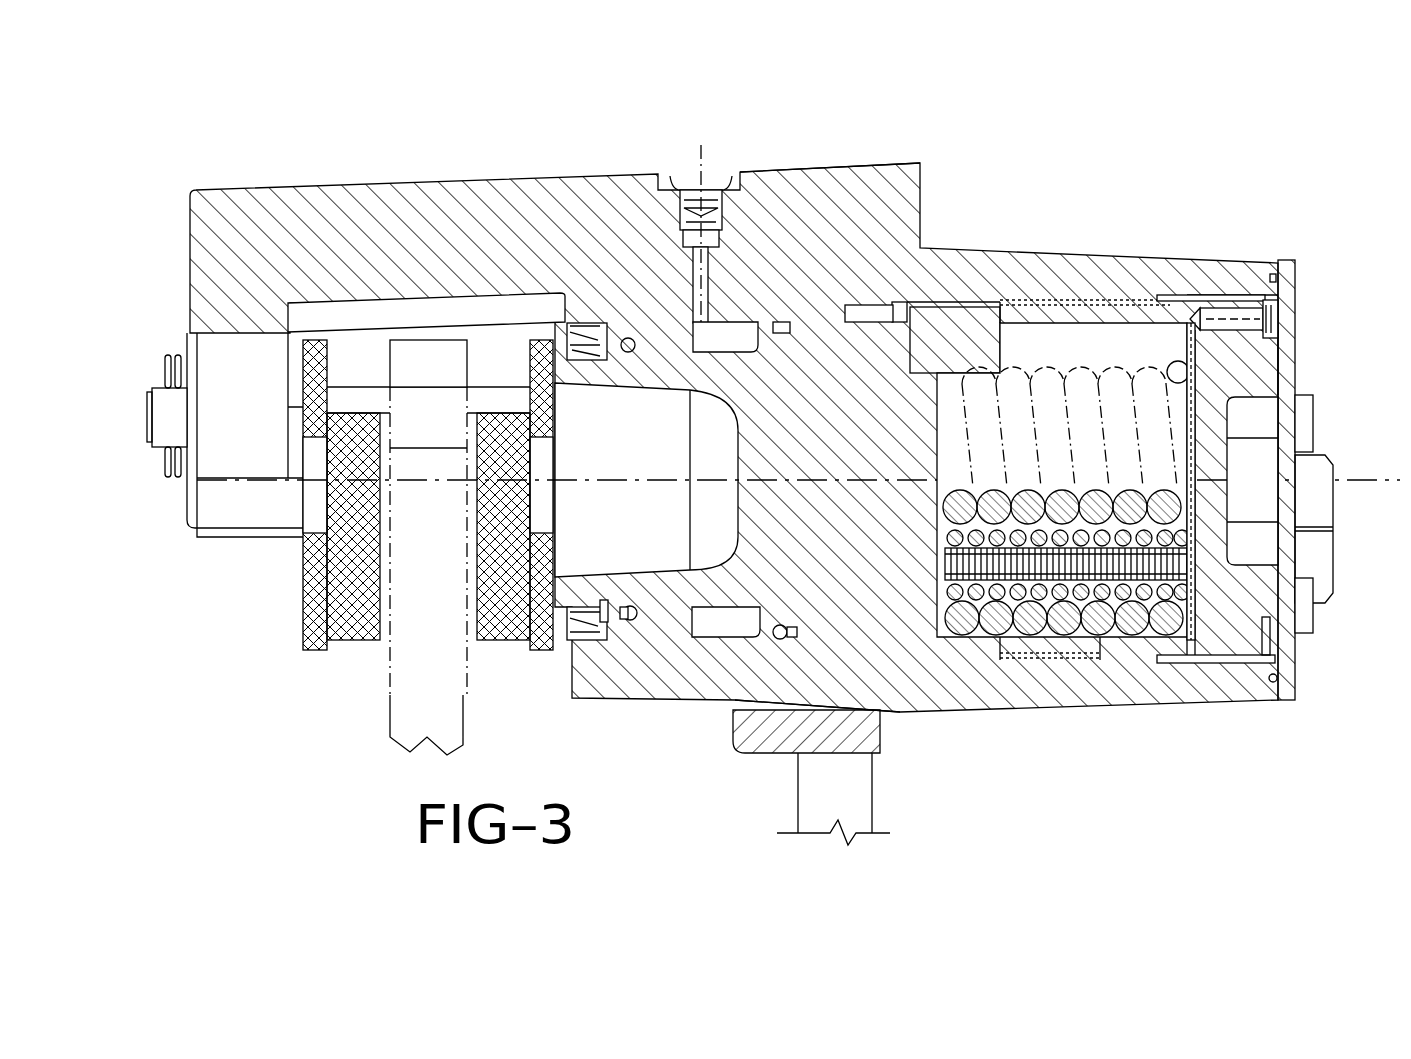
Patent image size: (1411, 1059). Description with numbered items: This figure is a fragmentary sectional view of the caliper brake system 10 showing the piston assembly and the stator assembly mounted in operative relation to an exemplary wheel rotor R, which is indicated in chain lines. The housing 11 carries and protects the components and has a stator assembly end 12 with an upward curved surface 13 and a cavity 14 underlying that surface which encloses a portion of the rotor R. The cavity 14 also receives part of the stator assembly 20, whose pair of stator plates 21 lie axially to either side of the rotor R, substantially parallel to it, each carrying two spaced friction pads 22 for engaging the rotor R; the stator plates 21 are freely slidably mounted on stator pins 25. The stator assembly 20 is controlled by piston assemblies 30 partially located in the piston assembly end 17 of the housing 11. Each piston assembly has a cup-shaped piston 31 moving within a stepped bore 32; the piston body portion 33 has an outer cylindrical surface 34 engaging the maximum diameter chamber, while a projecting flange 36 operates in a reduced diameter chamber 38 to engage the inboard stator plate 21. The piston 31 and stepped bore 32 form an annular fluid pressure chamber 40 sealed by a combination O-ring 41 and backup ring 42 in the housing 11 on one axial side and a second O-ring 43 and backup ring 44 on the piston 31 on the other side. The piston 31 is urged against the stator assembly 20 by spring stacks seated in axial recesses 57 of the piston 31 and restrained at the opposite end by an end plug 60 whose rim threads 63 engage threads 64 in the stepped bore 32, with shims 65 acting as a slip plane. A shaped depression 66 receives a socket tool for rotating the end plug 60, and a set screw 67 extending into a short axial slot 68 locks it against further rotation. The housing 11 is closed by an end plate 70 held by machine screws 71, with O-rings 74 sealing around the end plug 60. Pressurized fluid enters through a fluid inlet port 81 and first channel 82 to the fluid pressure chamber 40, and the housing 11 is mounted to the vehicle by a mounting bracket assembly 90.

The caliper brake system 10 is at (134, 146).
The housing 11 is at (790, 166).
The stator assembly end 12 is at (190, 240).
The upward curved surface 13 is at (328, 308).
The cavity 14 is at (343, 297).
The piston assembly end 17 is at (1022, 710).
The stator assembly 20 is at (292, 565).
The stator plates 21 is at (522, 360).
The pads 22 is at (348, 632).
The stator pins 25 is at (155, 420).
The piston assemblies 30 is at (985, 290).
The cup-shaped piston 31 is at (734, 437).
The stepped bore 32 is at (745, 340).
The body portion 33 is at (846, 341).
The outer cylindrical surface 34 is at (928, 305).
The projecting flange 36 is at (590, 328).
The reduced diameter chamber 38 is at (668, 600).
The annular fluid pressure chamber 40 is at (727, 625).
The O-ring 41 is at (660, 608).
The backup ring 42 is at (616, 614).
The second O-ring 43 is at (782, 640).
The backup ring 44 is at (805, 635).
The axial recess 57 is at (988, 648).
The end plug 60 is at (1182, 285).
The threads 63 is at (1140, 300).
The threads 64 is at (1048, 300).
The shims 65 is at (1197, 385).
The shaped depression 66 is at (1270, 538).
The set screw 67 is at (1252, 318).
The axial slot 68 is at (1228, 296).
The end plate 70 is at (1290, 690).
The machine screws 71 is at (1304, 412).
The O-rings 74 is at (1280, 679).
The fluid inlet port 81 is at (700, 180).
The first channel 82 is at (690, 240).
The mounting bracket assembly 90 is at (880, 796).
The wheel rotor R is at (388, 742).